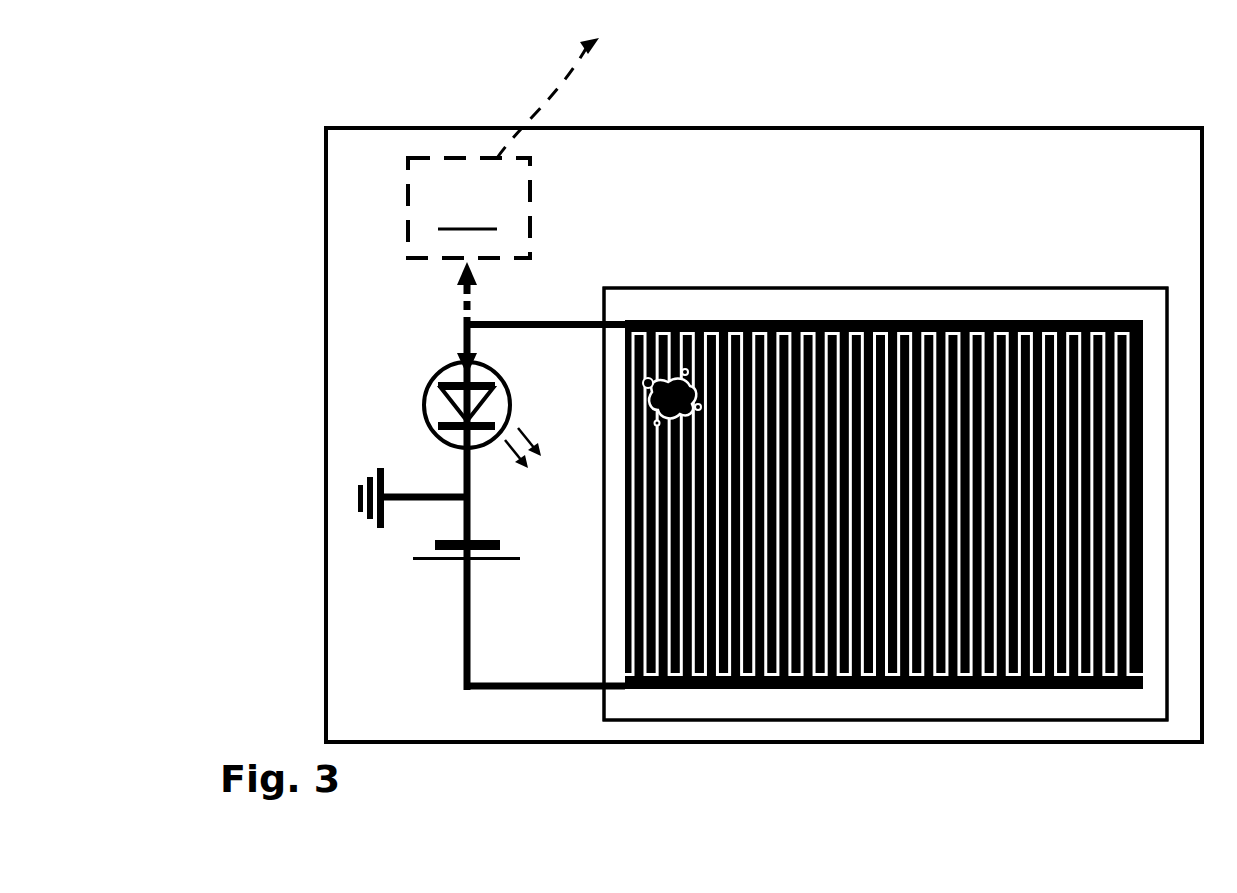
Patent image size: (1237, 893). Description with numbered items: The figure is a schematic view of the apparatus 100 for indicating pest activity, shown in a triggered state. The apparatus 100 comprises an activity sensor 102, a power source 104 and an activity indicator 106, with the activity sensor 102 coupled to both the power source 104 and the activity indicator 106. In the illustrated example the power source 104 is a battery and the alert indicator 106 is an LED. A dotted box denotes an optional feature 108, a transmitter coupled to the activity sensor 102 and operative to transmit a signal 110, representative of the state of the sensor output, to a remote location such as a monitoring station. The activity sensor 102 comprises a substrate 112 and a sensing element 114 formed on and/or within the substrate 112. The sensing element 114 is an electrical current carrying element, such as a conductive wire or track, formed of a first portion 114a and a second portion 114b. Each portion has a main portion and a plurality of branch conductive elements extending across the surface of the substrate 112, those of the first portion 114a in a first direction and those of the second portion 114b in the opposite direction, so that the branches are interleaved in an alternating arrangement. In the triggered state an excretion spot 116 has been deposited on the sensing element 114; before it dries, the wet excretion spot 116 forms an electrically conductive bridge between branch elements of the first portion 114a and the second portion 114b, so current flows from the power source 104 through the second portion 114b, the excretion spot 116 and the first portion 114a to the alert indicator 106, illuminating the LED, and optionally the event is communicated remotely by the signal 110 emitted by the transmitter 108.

The apparatus 100 is at (365, 187).
The activity sensor 102 is at (1096, 266).
The power source 104 is at (433, 560).
The activity indicator 106 is at (430, 382).
The optional feature 108 is at (469, 239).
The signal 110 is at (537, 114).
The substrate 112 is at (877, 287).
The sensing element 114 is at (917, 300).
The first portion 114a is at (957, 320).
The second portion 114b is at (820, 690).
The excretion spot 116 is at (690, 388).